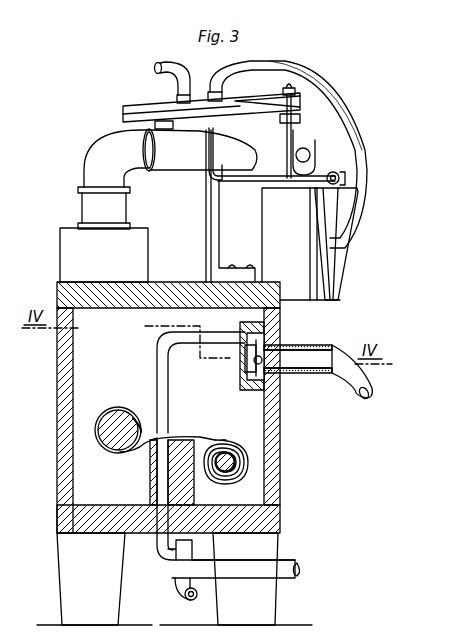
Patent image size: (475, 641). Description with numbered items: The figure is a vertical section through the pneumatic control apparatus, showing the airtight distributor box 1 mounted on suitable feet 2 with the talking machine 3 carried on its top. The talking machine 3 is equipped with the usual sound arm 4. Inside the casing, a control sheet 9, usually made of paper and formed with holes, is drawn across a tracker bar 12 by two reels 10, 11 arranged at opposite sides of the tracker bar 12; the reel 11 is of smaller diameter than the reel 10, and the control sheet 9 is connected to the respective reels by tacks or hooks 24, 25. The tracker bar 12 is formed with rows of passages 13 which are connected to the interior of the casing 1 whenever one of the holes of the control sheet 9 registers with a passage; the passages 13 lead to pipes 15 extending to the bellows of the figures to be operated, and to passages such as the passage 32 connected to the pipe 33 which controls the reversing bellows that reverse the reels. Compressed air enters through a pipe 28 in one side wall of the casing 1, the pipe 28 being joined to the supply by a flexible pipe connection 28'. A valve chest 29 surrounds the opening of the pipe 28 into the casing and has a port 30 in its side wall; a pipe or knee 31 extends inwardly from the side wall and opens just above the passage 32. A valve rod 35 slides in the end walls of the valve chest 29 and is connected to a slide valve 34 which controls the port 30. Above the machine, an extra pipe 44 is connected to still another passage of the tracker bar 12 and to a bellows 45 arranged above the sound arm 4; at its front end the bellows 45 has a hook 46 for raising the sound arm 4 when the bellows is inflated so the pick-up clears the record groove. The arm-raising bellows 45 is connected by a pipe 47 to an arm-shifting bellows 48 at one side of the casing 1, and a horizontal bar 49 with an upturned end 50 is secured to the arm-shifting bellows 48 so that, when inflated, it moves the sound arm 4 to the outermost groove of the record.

The distributor box 1 is at (60, 402).
The feet 2 is at (65, 578).
The talking machine 3 is at (62, 296).
The sound arm 4 is at (108, 152).
The control sheet 9 is at (145, 456).
The reel 10 is at (100, 432).
The reel 11 is at (232, 462).
The tracker bar 12 is at (150, 490).
The passages 13 is at (166, 441).
The pipes 15 is at (182, 598).
The tacks or hooks 24 is at (139, 420).
The tacks or hooks 25 is at (240, 446).
The pipe 28 is at (318, 380).
The pipe connection 28' is at (345, 385).
The valve chest 29 is at (243, 381).
The port 30 is at (245, 366).
The pipe or knee 31 is at (163, 346).
The passage 32 is at (162, 544).
The pipe 33 is at (286, 572).
The slide valve 34 is at (258, 344).
The valve rod 35 is at (260, 360).
The extra pipe 44 is at (162, 76).
The bellows 45 is at (197, 100).
The hook 46 is at (294, 134).
The pipe 47 is at (344, 101).
The arm-shifting bellows 48 is at (340, 210).
The horizontal bar 49 is at (249, 182).
The upturned end 50 is at (216, 130).